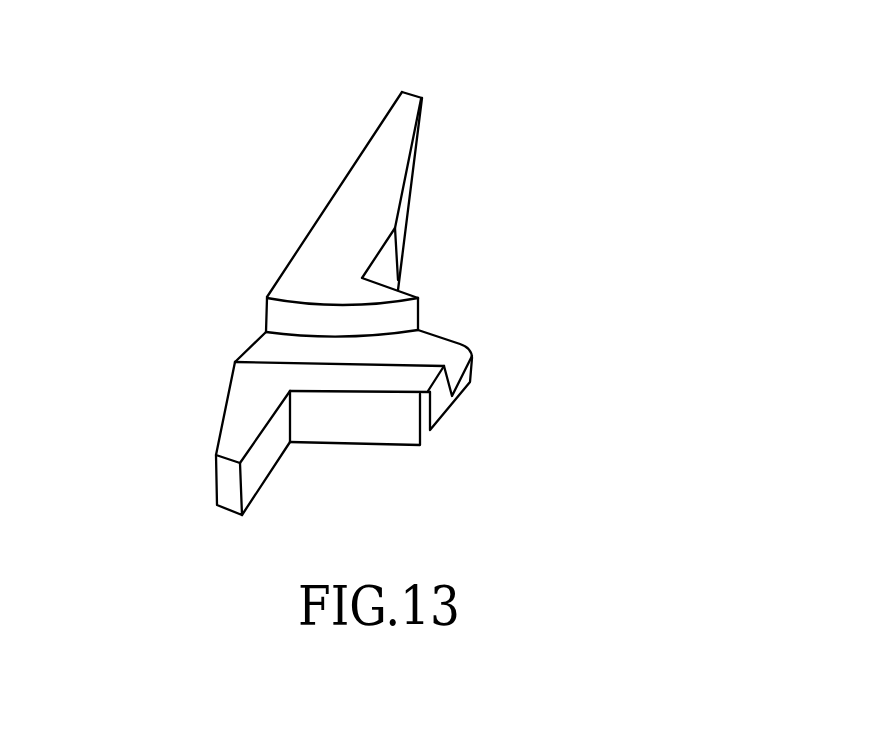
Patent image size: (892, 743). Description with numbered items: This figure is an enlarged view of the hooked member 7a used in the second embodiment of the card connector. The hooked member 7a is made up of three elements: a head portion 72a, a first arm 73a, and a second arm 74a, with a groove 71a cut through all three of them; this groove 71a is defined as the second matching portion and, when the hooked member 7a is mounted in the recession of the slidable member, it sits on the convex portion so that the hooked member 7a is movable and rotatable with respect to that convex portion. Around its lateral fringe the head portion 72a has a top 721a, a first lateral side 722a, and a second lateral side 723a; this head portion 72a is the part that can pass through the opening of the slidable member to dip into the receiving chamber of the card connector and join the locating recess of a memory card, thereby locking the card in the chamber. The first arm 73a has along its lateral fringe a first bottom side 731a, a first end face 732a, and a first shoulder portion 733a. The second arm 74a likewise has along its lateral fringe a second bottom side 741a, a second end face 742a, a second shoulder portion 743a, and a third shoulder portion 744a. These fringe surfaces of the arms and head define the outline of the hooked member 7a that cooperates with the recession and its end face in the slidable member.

The hooked member 7a is at (359, 292).
The groove 71a is at (311, 352).
The head portion 72a is at (444, 379).
The top 721a is at (456, 393).
The first lateral side 722a is at (337, 418).
The second lateral side 723a is at (474, 348).
The first arm 73a is at (249, 429).
The first bottom side 731a is at (222, 412).
The first end face 732a is at (233, 500).
The first shoulder portion 733a is at (260, 458).
The second arm 74a is at (430, 160).
The second bottom side 741a is at (328, 203).
The second end face 742a is at (422, 98).
The second shoulder portion 743a is at (415, 178).
The third shoulder portion 744a is at (390, 262).